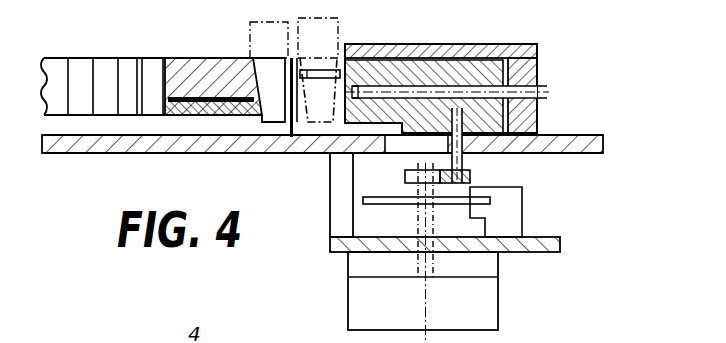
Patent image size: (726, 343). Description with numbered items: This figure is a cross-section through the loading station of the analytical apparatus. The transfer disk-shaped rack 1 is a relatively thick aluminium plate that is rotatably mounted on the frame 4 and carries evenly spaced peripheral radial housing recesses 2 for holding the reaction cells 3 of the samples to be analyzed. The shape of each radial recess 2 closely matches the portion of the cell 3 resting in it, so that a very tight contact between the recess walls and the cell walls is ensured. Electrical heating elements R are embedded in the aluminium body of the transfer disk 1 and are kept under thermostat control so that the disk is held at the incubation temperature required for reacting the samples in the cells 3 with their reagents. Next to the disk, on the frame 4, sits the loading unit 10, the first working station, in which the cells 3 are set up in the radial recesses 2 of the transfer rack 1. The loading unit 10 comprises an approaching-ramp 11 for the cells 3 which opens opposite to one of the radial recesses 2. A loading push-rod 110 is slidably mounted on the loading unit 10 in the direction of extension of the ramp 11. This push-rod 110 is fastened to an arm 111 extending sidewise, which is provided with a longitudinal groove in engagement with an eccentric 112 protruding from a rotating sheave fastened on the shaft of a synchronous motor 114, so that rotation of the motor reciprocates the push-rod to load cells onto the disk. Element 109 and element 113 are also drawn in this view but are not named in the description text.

The transfer disk-shaped rack 1 is at (152, 72).
The radial housing recess 2 is at (213, 104).
The electrical heating element R is at (193, 102).
The reaction cell 3 is at (269, 72).
The frame 4 is at (105, 154).
The loading unit 10 is at (484, 66).
The approaching-ramp 11 is at (293, 122).
The positioning member 109 is at (322, 60).
The loading push-rod 110 is at (465, 77).
The arm 111 is at (470, 175).
The eccentric 112 is at (407, 183).
The support plate 113 is at (377, 202).
The synchronous motor 114 is at (483, 302).